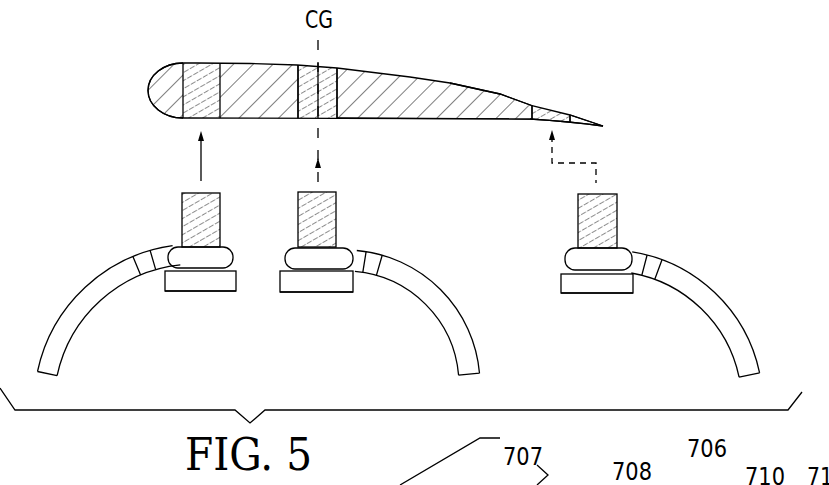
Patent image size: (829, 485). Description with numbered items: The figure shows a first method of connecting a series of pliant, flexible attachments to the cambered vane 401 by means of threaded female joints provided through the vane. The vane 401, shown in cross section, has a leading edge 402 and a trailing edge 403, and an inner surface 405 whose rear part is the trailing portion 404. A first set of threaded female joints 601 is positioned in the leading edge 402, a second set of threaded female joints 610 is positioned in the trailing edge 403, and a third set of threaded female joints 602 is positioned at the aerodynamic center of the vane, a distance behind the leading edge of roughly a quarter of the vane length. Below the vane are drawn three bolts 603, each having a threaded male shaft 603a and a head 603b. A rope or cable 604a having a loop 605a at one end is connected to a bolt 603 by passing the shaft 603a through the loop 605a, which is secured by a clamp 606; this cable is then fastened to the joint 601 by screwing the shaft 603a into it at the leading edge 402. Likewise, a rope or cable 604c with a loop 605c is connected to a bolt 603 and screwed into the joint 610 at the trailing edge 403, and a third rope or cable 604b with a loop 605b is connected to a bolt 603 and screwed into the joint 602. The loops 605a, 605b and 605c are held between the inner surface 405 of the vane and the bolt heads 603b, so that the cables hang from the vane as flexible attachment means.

The cambered vane 401 is at (498, 96).
The leading edge 402 is at (148, 92).
The trailing edge 403 is at (606, 122).
The trailing portion 404 is at (582, 126).
The inner surface 405 is at (415, 120).
The first set of threaded female joints 601 is at (197, 62).
The third set of threaded female joints 602 is at (330, 64).
The second set of threaded female joints 610 is at (548, 115).
The bolt 603 is at (400, 230).
The threaded male shaft 603a is at (182, 203).
The bolt head 603b is at (172, 278).
The rope or cable 604a is at (78, 333).
The third rope or cable 604b is at (447, 347).
The rope or cable 604c is at (727, 350).
The loop 605a is at (233, 258).
The loop 605b is at (280, 258).
The loop 605c is at (565, 257).
The clamp 606 is at (150, 270).